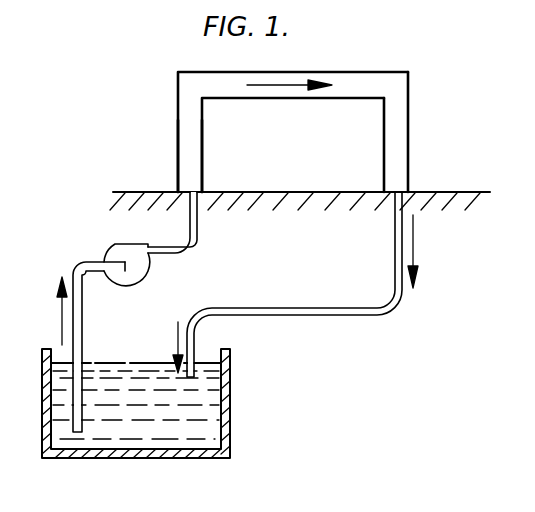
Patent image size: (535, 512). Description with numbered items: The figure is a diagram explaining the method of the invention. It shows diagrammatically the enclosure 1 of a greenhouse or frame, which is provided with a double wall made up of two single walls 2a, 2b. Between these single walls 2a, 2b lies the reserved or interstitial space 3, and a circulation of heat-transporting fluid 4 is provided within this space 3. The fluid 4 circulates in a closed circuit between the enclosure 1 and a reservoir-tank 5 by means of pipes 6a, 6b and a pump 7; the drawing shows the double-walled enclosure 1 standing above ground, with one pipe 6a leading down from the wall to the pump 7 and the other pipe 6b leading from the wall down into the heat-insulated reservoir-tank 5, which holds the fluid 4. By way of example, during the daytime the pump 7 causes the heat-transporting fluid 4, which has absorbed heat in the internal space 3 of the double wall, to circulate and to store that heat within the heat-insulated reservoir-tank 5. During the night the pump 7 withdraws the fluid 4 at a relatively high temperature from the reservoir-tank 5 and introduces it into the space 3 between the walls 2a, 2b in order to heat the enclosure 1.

The enclosure 1 is at (450, 84).
The single wall 2a is at (408, 153).
The single wall 2b is at (202, 163).
The interstitial space 3 is at (361, 98).
The heat-transporting fluid 4 is at (182, 94).
The reservoir-tank 5 is at (252, 415).
The pipe 6a is at (197, 238).
The pipe 6b is at (363, 316).
The pump 7 is at (126, 244).